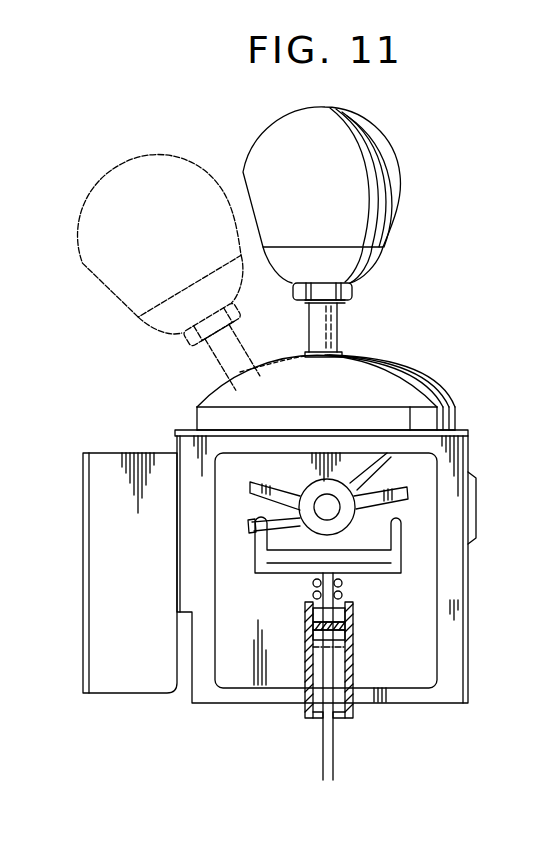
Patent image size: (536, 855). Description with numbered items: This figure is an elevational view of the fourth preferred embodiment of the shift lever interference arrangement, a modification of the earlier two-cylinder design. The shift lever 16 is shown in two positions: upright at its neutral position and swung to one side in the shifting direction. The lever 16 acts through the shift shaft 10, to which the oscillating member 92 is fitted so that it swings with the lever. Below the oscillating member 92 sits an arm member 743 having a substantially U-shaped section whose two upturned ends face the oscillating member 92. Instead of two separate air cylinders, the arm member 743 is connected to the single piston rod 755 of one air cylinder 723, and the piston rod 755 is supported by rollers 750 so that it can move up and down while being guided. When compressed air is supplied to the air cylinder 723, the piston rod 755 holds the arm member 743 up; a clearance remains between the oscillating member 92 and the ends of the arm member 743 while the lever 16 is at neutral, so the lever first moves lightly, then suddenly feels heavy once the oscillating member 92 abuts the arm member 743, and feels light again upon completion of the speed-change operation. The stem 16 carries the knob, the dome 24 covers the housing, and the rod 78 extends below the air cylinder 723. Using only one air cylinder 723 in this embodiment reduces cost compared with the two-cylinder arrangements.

The lever 16 is at (333, 328).
The dome cover 24 is at (387, 365).
The shift shaft 10 is at (323, 502).
The oscillating member 92 is at (377, 500).
The arm member 743 is at (402, 523).
The rollers 750 is at (342, 583).
The piston rod 755 is at (327, 613).
The air cylinder 723 is at (350, 718).
The rod 78 is at (323, 772).